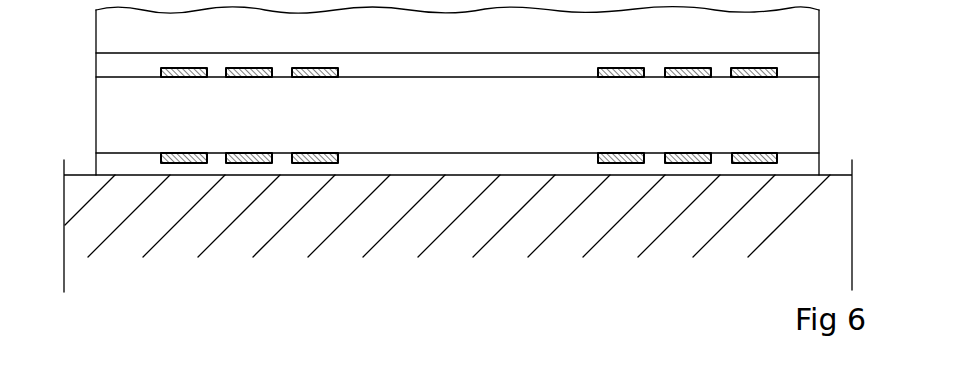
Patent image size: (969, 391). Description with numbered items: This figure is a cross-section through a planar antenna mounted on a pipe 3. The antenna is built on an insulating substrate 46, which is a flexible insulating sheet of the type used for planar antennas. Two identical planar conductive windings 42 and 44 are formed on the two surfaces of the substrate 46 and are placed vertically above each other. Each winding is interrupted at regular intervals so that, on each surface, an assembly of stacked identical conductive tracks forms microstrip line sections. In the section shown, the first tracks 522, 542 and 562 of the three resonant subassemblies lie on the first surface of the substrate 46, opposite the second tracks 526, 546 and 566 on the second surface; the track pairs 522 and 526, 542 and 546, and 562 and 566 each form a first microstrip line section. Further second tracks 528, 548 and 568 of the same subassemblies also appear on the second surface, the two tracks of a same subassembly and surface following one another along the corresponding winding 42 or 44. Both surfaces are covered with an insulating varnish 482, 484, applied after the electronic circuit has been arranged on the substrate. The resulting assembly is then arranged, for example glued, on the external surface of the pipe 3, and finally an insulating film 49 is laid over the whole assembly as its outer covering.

The pipe 3 is at (485, 233).
The planar conductive winding 42 is at (95, 73).
The planar conductive winding 44 is at (95, 157).
The insulating substrate 46 is at (427, 122).
The insulating film 49 is at (122, 30).
The insulating varnish 482 is at (440, 64).
The insulating varnish 484 is at (507, 163).
The first track 522 is at (180, 68).
The first track 542 is at (246, 68).
The first track 562 is at (313, 68).
The second track 526 is at (180, 152).
The second track 546 is at (245, 152).
The second track 566 is at (313, 152).
The second track 568 is at (625, 68).
The second track 548 is at (690, 68).
The second track 528 is at (755, 68).